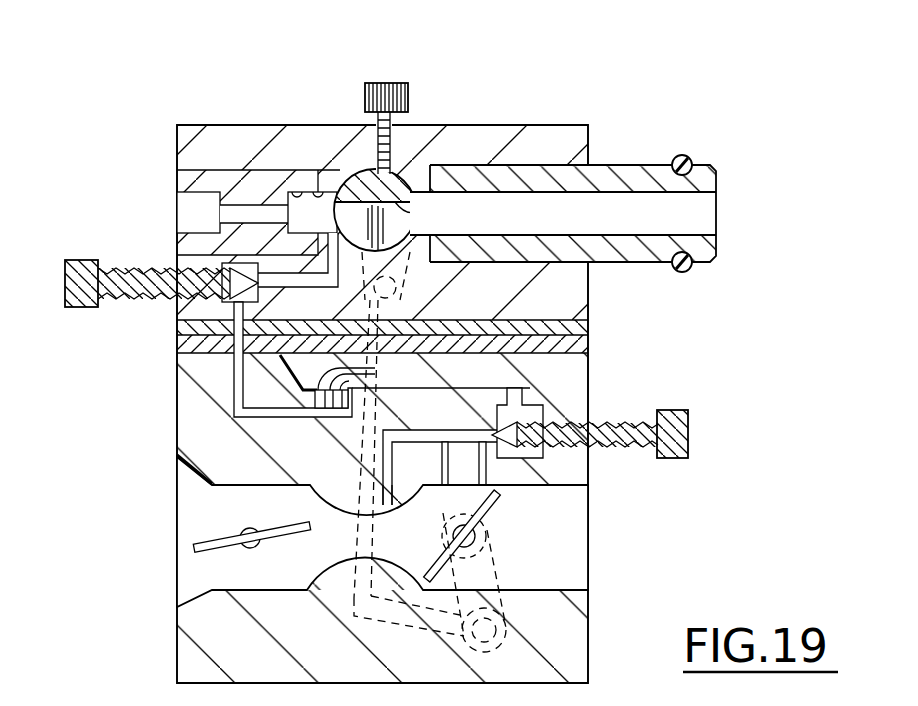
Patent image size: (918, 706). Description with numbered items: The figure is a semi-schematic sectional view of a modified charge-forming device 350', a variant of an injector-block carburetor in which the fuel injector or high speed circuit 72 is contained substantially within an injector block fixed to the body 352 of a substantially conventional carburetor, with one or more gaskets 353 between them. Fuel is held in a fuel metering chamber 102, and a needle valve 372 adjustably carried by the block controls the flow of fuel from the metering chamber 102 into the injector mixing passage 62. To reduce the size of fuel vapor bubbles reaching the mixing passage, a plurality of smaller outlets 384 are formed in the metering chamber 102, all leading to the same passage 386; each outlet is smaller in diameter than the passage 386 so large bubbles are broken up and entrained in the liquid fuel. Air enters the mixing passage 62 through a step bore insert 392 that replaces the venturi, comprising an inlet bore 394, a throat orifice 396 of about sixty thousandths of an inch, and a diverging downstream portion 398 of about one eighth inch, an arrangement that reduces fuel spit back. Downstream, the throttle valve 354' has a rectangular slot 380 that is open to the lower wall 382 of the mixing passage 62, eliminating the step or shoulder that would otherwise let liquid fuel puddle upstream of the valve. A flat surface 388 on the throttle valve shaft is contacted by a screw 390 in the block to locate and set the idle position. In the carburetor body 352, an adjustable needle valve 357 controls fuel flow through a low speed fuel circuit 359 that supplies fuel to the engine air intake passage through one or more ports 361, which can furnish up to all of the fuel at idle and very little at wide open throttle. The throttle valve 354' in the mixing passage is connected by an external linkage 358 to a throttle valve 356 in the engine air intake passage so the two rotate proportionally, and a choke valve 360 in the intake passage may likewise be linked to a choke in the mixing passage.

The modified charge-forming device 350' is at (462, 383).
The body 352 is at (580, 397).
The gasket 353 is at (585, 325).
The fuel metering chamber 102 is at (575, 358).
The step bore insert 392 is at (242, 183).
The throat orifice 396 is at (225, 207).
The inlet bore 394 is at (196, 232).
The diverging downstream portion 398 is at (298, 192).
The needle valve 372 is at (82, 262).
The injector mixing passage 62 is at (336, 195).
The throttle valve 354' is at (477, 149).
The flat surface 388 is at (368, 176).
The screw 390 is at (398, 88).
The rectangular slot 380 is at (440, 185).
The lower wall 382 is at (416, 232).
The passage 386 is at (235, 400).
The outlets 384 is at (372, 370).
The low speed fuel circuit 359 is at (448, 410).
The ports 361 is at (378, 510).
The adjustable needle valve 357 is at (690, 433).
The choke valve 360 is at (205, 545).
The throttle valve 356 is at (495, 503).
The external linkage 358 is at (360, 532).
The fuel injector or high speed circuit 72 is at (208, 378).